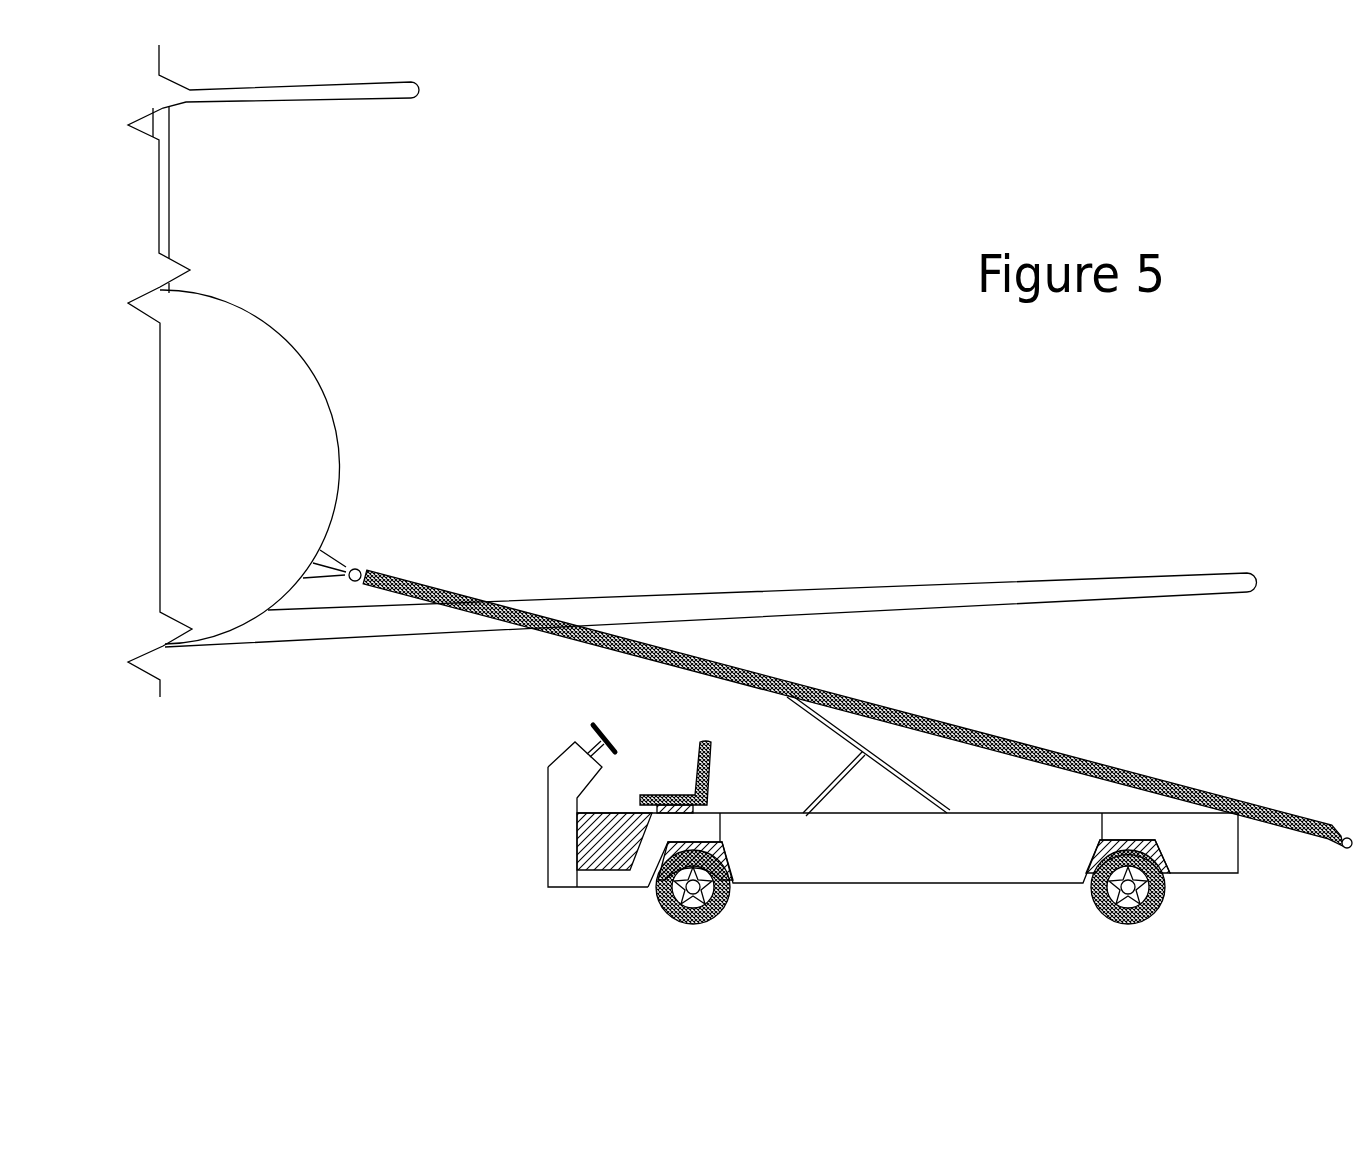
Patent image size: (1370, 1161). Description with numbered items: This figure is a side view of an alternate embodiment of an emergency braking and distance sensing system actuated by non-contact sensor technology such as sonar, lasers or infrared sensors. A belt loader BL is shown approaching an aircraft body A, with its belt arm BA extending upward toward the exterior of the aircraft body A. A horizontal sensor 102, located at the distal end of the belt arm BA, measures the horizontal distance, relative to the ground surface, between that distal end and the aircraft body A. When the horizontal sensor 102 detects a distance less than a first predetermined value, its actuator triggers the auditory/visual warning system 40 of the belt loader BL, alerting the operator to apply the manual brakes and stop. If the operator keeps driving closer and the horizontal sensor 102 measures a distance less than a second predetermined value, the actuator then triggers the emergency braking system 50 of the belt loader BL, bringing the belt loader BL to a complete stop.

The aircraft body A is at (250, 495).
The horizontal sensor 102 is at (355, 568).
The auditory/visual warning system 40 is at (586, 723).
The emergency braking system 50 is at (673, 906).
The belt arm BA is at (1040, 743).
The belt loader BL is at (893, 862).